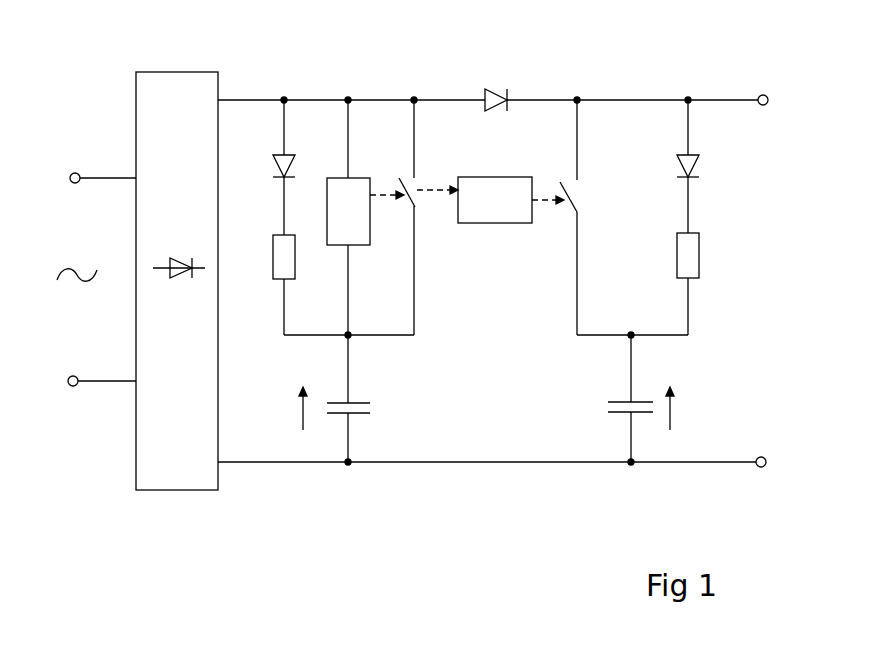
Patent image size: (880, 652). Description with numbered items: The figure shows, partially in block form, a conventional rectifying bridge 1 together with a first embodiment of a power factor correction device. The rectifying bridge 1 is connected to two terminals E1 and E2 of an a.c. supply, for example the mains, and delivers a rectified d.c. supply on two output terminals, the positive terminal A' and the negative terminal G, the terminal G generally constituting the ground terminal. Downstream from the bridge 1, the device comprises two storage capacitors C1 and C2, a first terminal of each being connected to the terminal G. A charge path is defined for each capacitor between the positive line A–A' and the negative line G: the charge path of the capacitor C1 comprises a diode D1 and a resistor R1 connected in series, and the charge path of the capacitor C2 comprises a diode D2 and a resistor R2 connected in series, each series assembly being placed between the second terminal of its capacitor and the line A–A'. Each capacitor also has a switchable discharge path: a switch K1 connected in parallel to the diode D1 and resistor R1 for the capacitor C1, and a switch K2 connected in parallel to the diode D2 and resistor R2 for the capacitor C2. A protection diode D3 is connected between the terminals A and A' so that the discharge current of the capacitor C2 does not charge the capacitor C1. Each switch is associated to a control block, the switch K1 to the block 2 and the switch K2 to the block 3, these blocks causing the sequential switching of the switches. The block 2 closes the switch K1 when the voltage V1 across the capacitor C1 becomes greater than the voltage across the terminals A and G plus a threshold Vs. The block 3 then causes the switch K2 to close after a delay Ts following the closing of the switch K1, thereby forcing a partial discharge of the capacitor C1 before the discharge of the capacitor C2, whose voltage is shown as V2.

The rectifying bridge 1 is at (173, 72).
The control block 2 is at (357, 217).
The control block 3 is at (474, 176).
The threshold Vs is at (360, 178).
The delay Ts is at (480, 177).
The terminal of a.c. supply E1 is at (98, 165).
The terminal of a.c. supply E2 is at (97, 397).
The terminal A is at (268, 75).
The positive output terminal A' is at (745, 75).
The negative output terminal G is at (758, 467).
The diode D1 is at (269, 140).
The diode D2 is at (704, 139).
The protection diode D3 is at (496, 88).
The resistor R1 is at (267, 256).
The resistor R2 is at (705, 256).
The storage capacitor C1 is at (368, 398).
The storage capacitor C2 is at (609, 398).
The switch K1 is at (406, 217).
The switch K2 is at (569, 217).
The voltage across capacitor C1 V1 is at (288, 408).
The voltage across capacitor C2 V2 is at (684, 408).